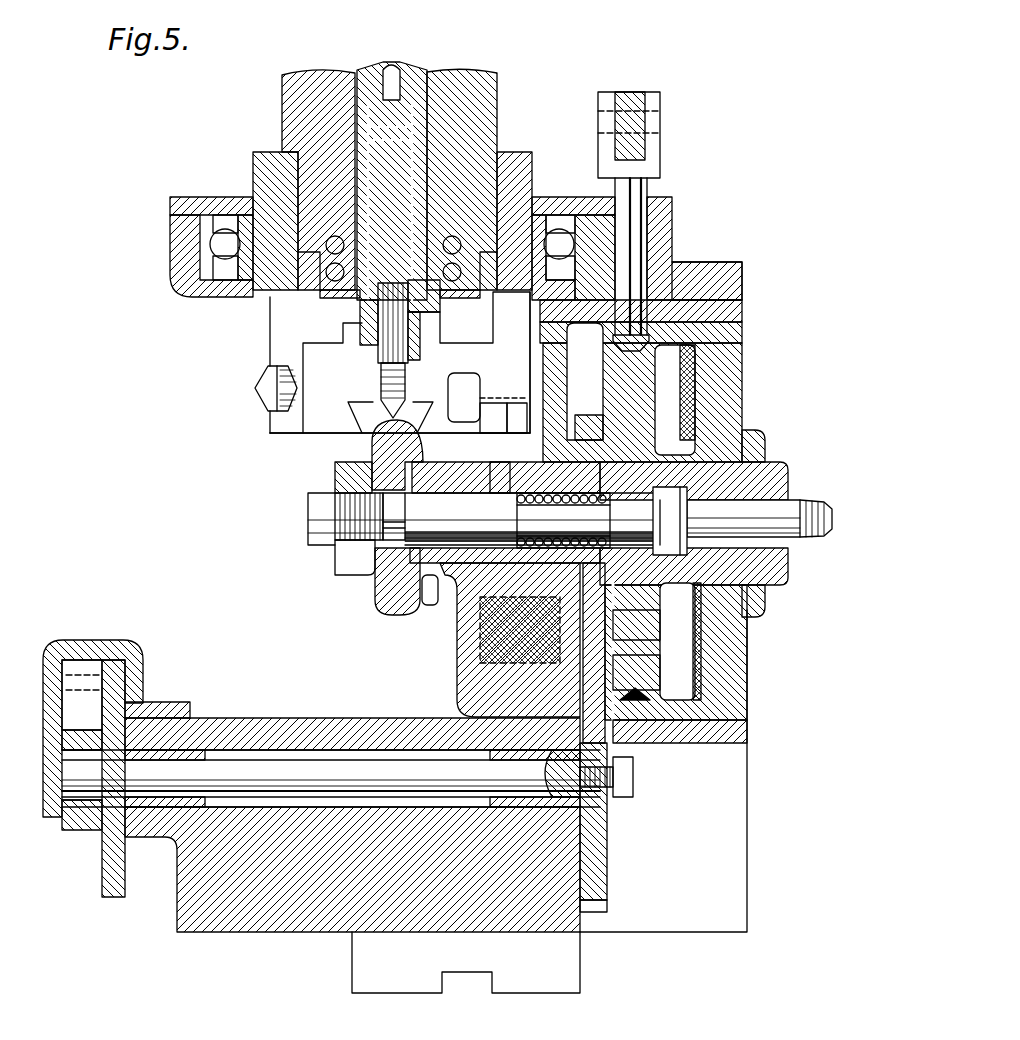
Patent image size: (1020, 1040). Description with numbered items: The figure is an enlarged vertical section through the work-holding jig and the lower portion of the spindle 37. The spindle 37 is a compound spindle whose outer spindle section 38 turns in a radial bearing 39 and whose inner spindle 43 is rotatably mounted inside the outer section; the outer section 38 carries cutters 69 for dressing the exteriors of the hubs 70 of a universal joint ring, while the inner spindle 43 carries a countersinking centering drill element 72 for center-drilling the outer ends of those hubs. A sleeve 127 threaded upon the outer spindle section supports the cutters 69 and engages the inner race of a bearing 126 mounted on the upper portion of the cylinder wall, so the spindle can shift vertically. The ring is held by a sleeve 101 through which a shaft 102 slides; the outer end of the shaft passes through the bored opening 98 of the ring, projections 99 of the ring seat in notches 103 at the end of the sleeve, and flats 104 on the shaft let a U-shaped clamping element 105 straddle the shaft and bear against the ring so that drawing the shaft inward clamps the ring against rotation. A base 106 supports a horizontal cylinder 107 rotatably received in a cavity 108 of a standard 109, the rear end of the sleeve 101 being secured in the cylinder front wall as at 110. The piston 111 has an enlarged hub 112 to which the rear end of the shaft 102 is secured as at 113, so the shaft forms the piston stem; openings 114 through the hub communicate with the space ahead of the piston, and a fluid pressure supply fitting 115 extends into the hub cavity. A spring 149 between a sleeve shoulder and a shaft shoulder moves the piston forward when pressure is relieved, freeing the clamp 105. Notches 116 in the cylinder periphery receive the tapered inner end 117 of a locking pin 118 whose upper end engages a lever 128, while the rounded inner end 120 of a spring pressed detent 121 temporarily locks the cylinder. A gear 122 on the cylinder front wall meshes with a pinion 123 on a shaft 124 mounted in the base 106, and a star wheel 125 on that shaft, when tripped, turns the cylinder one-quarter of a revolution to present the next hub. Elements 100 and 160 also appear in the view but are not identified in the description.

The spindle 37 is at (275, 119).
The outer spindle section 38 is at (282, 98).
The radial bearing 39 is at (300, 291).
The inner spindle 43 is at (355, 138).
The cutters 69 is at (400, 356).
The hubs 70 is at (380, 437).
The countersinking centering drill element 72 is at (390, 322).
The opening 98 is at (394, 516).
The projections 99 is at (420, 470).
The tool holder 100 is at (378, 455).
The sleeve 101 is at (444, 596).
The shaft 102 is at (480, 519).
The notches 103 is at (426, 468).
The flats 104 is at (348, 546).
The U-shaped clamping element 105 is at (345, 493).
The base 106 is at (306, 936).
The cylinder 107 is at (728, 337).
The cavity 108 is at (705, 319).
The standard 109 is at (745, 286).
The securing means 110 is at (590, 480).
The piston 111 is at (742, 394).
The enlarged hub 112 is at (700, 600).
The securing means 113 is at (670, 521).
The openings 114 is at (760, 468).
The fluid pressure supply fitting 115 is at (768, 503).
The notches 116 is at (640, 722).
The tapered inner end 117 is at (620, 333).
The locking pin 118 is at (674, 238).
The rounded inner end 120 is at (620, 627).
The spring pressed detent 121 is at (572, 640).
The gear 122 is at (615, 658).
The pinion 123 is at (597, 838).
The shaft 124 is at (331, 778).
The star wheel 125 is at (108, 866).
The bearing 126 is at (558, 222).
The sleeve 127 is at (532, 170).
The lever 128 is at (633, 95).
The spring 149 is at (497, 471).
The block 160 is at (355, 568).